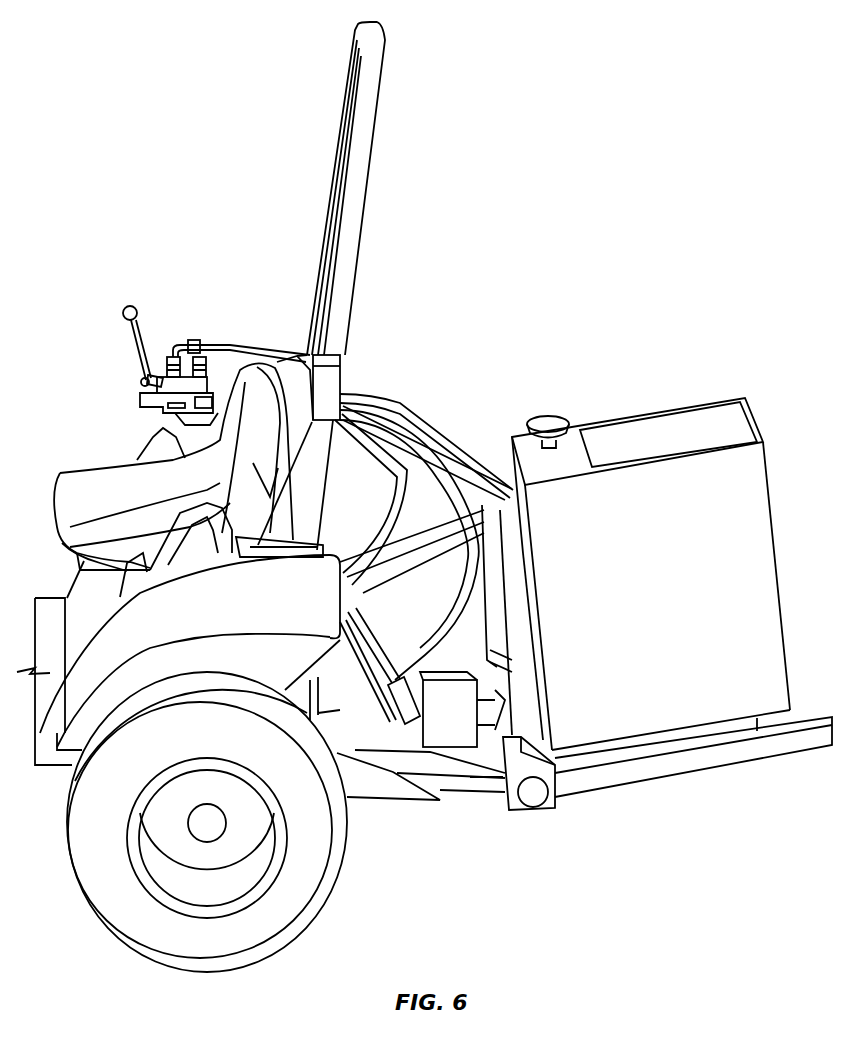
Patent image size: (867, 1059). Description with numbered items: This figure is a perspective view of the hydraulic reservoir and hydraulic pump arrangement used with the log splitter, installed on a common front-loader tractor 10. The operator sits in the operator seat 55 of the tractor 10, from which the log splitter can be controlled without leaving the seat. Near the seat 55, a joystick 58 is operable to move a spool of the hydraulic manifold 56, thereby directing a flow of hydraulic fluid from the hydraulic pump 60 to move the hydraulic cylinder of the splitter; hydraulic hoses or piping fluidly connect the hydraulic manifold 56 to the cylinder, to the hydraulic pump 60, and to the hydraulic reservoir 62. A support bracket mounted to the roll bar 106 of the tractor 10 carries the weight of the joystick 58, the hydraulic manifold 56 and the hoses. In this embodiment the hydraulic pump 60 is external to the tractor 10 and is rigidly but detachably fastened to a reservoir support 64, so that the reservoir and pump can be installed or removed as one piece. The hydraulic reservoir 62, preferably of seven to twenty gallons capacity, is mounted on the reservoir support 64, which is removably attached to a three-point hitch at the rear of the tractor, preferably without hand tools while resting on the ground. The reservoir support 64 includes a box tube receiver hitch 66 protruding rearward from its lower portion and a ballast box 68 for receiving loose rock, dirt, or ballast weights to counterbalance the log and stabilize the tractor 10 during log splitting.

The front-loader tractor 10 is at (92, 330).
The operator seat 55 is at (97, 482).
The hydraulic manifold 56 is at (202, 395).
The joystick 58 is at (143, 350).
The hydraulic pump 60 is at (458, 697).
The hydraulic reservoir 62 is at (520, 437).
The reservoir support 64 is at (555, 790).
The receiver hitch 66 is at (805, 718).
The ballast box 68 is at (672, 425).
The roll bar 106 is at (337, 163).